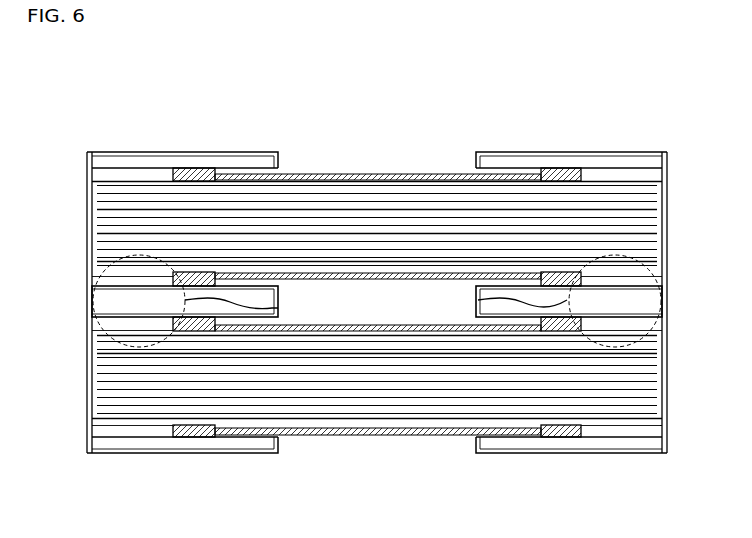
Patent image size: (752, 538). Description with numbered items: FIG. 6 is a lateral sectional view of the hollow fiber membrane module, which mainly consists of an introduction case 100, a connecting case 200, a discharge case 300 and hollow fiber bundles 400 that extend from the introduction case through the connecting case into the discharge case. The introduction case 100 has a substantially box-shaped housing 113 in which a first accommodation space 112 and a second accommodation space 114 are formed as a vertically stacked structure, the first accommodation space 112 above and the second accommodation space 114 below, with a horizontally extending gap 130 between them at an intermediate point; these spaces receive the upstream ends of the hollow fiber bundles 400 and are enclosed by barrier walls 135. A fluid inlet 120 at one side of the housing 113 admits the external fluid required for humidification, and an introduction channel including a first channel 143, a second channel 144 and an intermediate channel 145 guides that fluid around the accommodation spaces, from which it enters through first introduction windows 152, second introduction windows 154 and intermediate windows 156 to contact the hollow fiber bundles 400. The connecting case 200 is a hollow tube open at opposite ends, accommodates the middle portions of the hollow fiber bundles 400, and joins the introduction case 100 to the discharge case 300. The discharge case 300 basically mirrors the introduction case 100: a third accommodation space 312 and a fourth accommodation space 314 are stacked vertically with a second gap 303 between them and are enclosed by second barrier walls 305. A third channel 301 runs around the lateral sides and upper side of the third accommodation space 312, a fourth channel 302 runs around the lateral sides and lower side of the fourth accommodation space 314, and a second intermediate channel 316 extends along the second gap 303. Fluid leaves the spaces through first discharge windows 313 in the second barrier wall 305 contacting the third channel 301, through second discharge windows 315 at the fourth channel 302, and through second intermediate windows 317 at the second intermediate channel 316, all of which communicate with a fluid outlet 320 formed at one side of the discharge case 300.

The introduction case 100 is at (217, 463).
The first accommodation space 112 is at (99, 221).
The housing 113 is at (100, 152).
The second accommodation space 114 is at (97, 405).
The fluid inlet 120 is at (278, 309).
The gap 130 is at (293, 276).
The barrier wall 135 is at (195, 174).
The first channel 143 is at (232, 160).
The second channel 144 is at (152, 445).
The intermediate channel 145 is at (117, 303).
The first introduction windows 152 is at (145, 162).
The second introduction windows 154 is at (127, 432).
The intermediate windows 156 is at (92, 280).
The connecting case 200 is at (392, 174).
The discharge case 300 is at (630, 136).
The third channel 301 is at (507, 162).
The fourth channel 302 is at (515, 443).
The second gap 303 is at (472, 286).
The second barrier wall 305 is at (567, 174).
The third accommodation space 312 is at (650, 213).
The first discharge windows 313 is at (608, 162).
The fourth accommodation space 314 is at (654, 398).
The second discharge windows 315 is at (616, 440).
The second intermediate channel 316 is at (643, 301).
The second intermediate windows 317 is at (625, 278).
The fluid outlet 320 is at (478, 293).
The hollow fiber bundles 400 is at (383, 252).